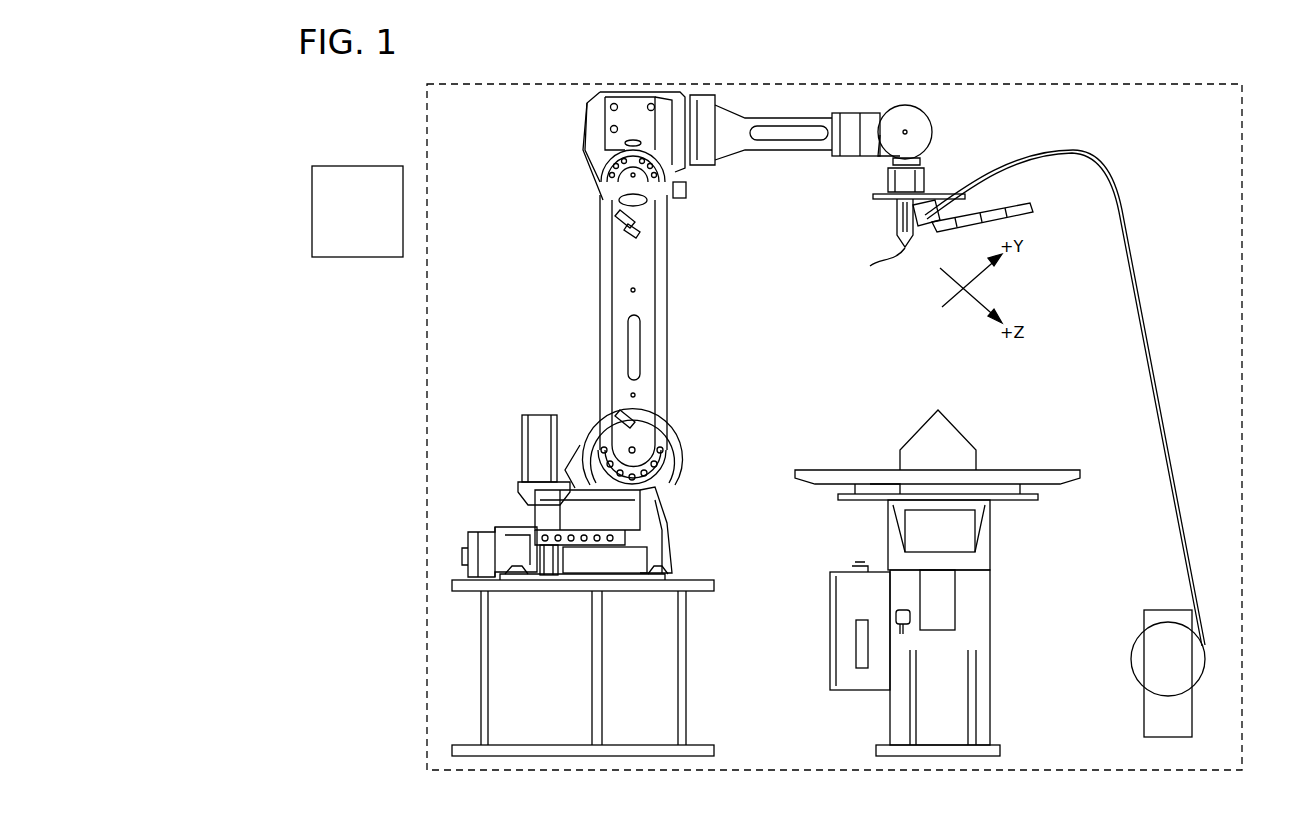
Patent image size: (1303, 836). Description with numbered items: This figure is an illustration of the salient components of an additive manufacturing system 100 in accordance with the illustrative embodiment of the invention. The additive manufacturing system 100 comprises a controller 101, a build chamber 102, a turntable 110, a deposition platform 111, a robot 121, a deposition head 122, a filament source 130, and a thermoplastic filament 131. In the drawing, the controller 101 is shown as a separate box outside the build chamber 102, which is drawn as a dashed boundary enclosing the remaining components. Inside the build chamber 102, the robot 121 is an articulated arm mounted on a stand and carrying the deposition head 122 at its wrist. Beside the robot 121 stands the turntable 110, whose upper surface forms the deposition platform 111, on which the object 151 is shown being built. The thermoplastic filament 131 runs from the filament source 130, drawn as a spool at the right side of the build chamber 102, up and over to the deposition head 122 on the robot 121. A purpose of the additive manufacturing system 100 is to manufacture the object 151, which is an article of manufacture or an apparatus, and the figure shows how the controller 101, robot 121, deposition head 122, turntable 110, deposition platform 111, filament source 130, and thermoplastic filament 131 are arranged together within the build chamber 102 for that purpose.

The additive manufacturing system 100 is at (345, 132).
The controller 101 is at (312, 192).
The build chamber 102 is at (1242, 115).
The turntable 110 is at (1003, 592).
The deposition platform 111 is at (836, 470).
The robot 121 is at (578, 240).
The deposition head 122 is at (883, 218).
The filament source 130 is at (1131, 658).
The thermoplastic filament 131 is at (895, 258).
The object 151 is at (924, 426).